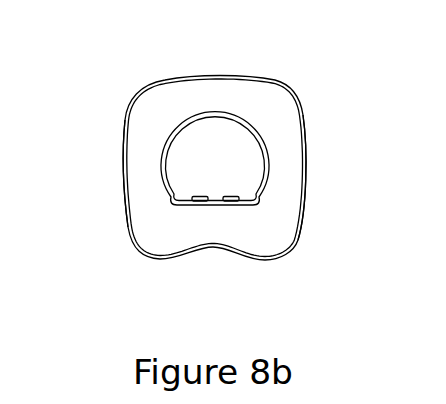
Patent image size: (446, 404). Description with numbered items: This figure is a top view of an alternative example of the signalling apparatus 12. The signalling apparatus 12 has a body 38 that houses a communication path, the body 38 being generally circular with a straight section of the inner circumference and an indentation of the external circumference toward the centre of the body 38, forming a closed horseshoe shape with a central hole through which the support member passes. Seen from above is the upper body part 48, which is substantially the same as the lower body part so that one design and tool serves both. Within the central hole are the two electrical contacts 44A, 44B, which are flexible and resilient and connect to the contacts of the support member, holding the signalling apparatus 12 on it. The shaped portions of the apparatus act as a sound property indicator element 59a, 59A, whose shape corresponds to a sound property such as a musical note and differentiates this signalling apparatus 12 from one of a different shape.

The signalling apparatus 12 is at (213, 262).
The body 38 is at (295, 75).
The upper body part 48 is at (150, 108).
The electrical contact 44A is at (233, 195).
The electrical contact 44B is at (199, 195).
The sound property indicator element 59a is at (108, 153).
The sound property indicator element 59A is at (310, 110).